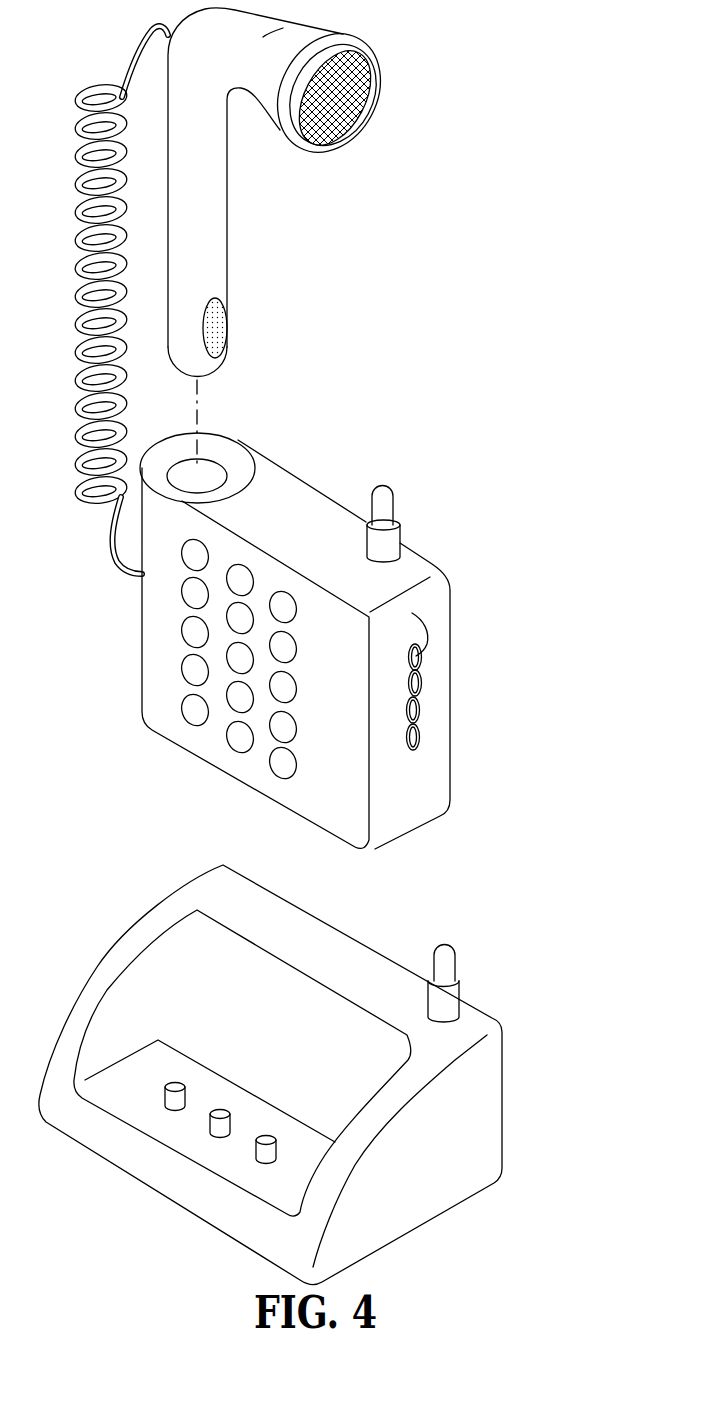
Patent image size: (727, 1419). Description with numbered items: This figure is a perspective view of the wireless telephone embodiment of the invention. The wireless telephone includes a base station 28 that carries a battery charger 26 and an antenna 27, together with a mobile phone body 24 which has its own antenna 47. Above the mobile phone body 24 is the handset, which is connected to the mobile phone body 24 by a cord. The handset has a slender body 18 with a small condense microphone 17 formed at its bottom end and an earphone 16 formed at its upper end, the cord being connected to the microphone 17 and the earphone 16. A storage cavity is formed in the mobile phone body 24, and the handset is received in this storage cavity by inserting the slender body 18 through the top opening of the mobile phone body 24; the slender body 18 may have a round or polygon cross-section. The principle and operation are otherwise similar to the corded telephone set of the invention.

The earphone 16 is at (323, 90).
The condense microphone 17 is at (220, 330).
The slender body 18 is at (207, 182).
The mobile phone body 24 is at (430, 777).
The battery charger 26 is at (170, 1102).
The antenna 27 is at (448, 961).
The base station 28 is at (459, 1136).
The antenna 47 is at (385, 502).